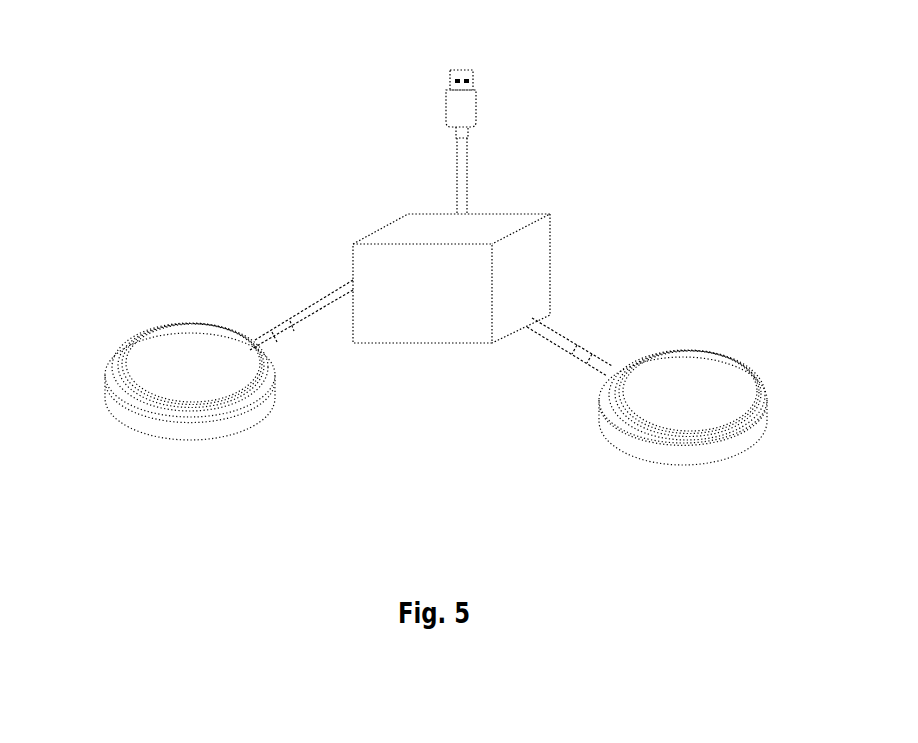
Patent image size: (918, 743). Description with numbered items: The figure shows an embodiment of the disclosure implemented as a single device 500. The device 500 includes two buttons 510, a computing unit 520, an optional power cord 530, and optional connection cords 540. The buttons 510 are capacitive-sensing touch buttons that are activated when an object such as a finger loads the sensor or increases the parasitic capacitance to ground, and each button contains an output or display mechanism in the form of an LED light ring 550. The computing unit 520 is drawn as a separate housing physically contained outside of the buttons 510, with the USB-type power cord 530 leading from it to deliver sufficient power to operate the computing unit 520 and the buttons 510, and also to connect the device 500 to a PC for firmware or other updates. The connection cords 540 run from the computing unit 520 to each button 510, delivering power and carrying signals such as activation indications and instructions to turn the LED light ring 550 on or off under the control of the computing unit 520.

The single device 500 is at (347, 205).
The buttons 510 is at (123, 420).
The computing unit 520 is at (546, 213).
The power cord 530 is at (465, 70).
The connection cords 540 is at (312, 308).
The LED light ring 550 is at (127, 361).